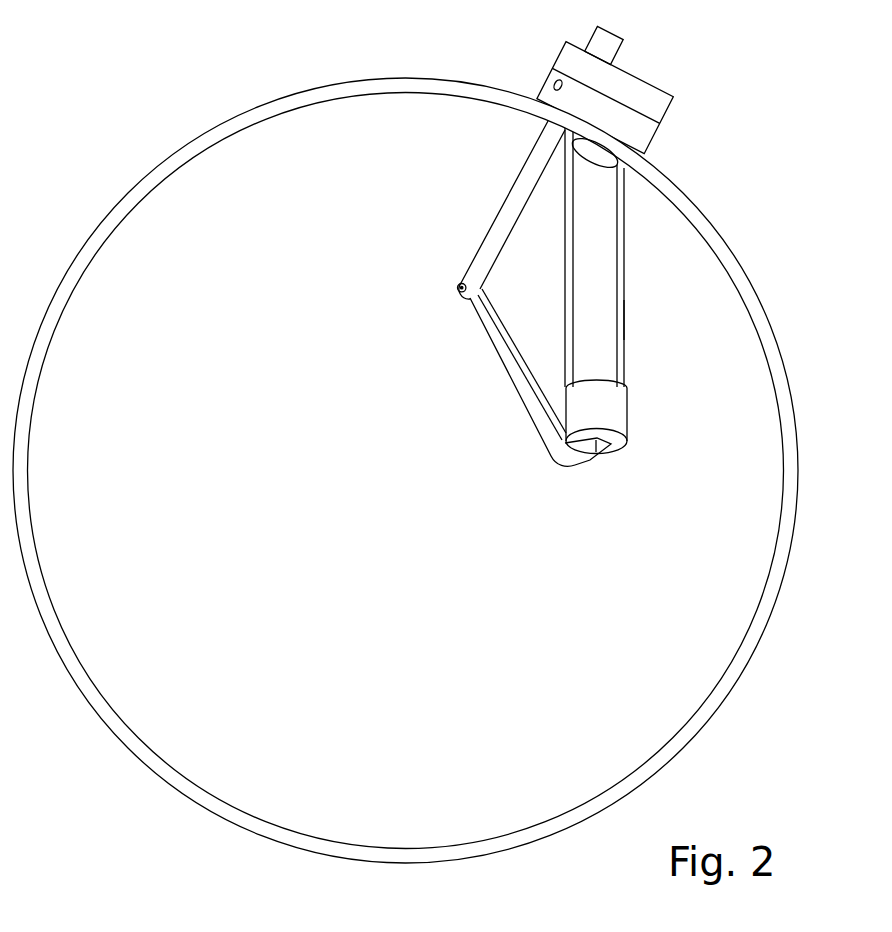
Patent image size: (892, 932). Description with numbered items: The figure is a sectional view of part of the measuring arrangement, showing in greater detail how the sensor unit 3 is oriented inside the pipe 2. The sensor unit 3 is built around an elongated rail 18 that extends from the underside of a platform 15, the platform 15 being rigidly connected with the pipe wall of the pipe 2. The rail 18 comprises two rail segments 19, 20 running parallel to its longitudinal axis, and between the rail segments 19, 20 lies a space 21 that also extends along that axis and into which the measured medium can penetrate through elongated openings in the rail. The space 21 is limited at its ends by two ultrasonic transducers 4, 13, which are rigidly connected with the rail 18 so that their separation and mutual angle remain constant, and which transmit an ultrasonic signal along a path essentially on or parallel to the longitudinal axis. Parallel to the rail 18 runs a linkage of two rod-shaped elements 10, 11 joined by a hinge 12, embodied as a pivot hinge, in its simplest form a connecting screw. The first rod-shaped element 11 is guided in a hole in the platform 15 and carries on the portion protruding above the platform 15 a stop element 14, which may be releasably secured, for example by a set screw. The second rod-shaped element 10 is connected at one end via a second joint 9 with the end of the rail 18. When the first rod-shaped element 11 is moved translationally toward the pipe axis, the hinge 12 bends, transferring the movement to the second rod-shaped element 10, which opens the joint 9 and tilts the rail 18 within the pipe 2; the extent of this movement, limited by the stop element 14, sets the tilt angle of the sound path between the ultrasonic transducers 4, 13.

The pipe 2 is at (764, 306).
The sensor unit 3 is at (622, 248).
The ultrasonic transducer 4 is at (624, 382).
The second joint 9 is at (595, 447).
The second rod-shaped element 10 is at (470, 308).
The first rod-shaped element 11 is at (518, 178).
The hinge 12 is at (456, 288).
The ultrasonic transducer 13 is at (612, 165).
The stop element 14 is at (604, 45).
The platform 15 is at (660, 98).
The rail 18 is at (568, 283).
The rail segment 19 is at (625, 318).
The rail segment 20 is at (564, 228).
The space 21 is at (604, 216).